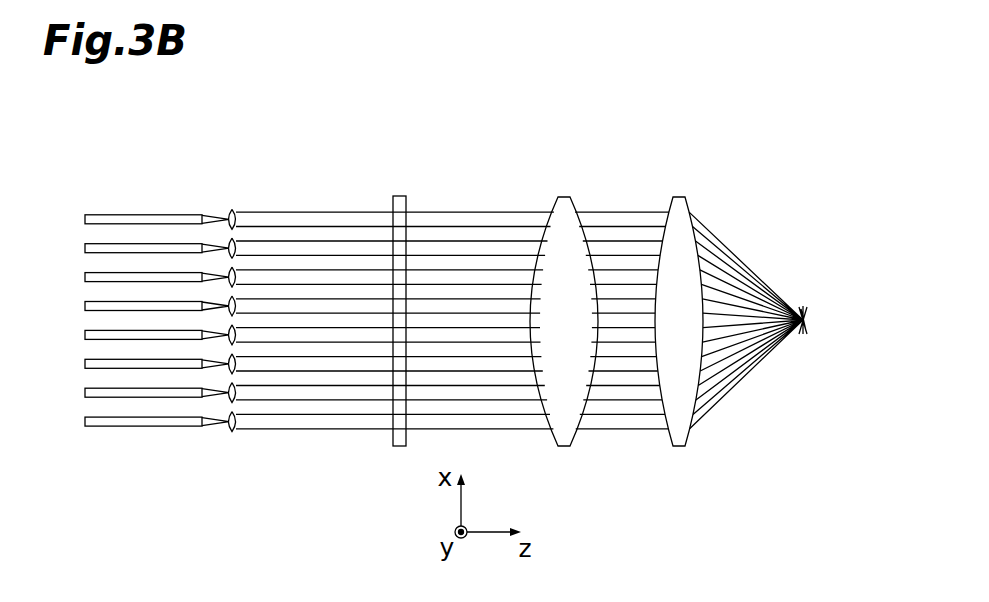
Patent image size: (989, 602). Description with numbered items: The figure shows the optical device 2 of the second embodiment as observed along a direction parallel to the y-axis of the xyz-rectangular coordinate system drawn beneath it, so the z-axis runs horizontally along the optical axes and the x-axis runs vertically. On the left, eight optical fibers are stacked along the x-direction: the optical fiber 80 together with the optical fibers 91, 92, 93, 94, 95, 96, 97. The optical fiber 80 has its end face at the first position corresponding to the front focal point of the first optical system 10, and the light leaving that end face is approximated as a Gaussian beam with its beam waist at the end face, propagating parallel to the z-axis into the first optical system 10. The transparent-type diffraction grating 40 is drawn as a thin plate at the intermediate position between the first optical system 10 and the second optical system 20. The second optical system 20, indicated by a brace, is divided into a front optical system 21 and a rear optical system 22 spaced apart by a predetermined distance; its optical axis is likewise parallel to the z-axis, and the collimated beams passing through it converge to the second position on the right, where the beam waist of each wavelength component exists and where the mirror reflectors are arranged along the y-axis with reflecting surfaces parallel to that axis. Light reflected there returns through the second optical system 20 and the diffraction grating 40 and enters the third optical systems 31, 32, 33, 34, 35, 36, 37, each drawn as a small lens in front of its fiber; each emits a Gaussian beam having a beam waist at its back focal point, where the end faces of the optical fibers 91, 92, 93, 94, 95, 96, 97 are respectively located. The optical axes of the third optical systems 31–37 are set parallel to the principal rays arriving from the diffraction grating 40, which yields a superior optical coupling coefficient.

The optical device 2 is at (497, 120).
The first optical system 10 is at (237, 304).
The second optical system 20 is at (545, 137).
The front optical system 21 is at (563, 197).
The rear optical system 22 is at (679, 199).
The third optical system 31 is at (237, 216).
The third optical system 32 is at (237, 246).
The third optical system 33 is at (237, 275).
The third optical system 34 is at (237, 336).
The third optical system 35 is at (237, 365).
The third optical system 36 is at (237, 394).
The third optical system 37 is at (237, 423).
The diffraction grating 40 is at (397, 196).
The optical fiber 80 is at (95, 301).
The optical fiber 91 is at (95, 214).
The optical fiber 92 is at (95, 243).
The optical fiber 93 is at (95, 272).
The optical fiber 94 is at (95, 330).
The optical fiber 95 is at (95, 359).
The optical fiber 96 is at (95, 388).
The optical fiber 97 is at (95, 417).